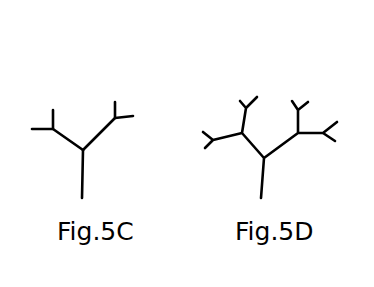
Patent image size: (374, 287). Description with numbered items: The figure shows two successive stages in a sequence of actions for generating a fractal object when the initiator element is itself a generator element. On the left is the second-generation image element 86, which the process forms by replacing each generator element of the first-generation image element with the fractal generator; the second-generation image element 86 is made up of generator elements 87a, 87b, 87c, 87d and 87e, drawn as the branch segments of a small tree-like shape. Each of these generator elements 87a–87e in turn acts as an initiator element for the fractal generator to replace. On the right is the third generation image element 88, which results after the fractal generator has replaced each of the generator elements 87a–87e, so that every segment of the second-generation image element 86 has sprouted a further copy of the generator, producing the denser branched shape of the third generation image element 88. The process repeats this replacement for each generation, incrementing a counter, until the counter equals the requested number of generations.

In FIG. 5C, the second-generation image element 86 is at (100, 68).
In FIG. 5C, the generator element 87a is at (53, 113).
In FIG. 5C, the generator element 87b is at (32, 129).
In FIG. 5C, the generator element 87c is at (82, 163).
In FIG. 5C, the generator element 87d is at (115, 107).
In FIG. 5C, the generator element 87e is at (133, 116).
In FIG. 5D, the third generation image element 88 is at (282, 63).